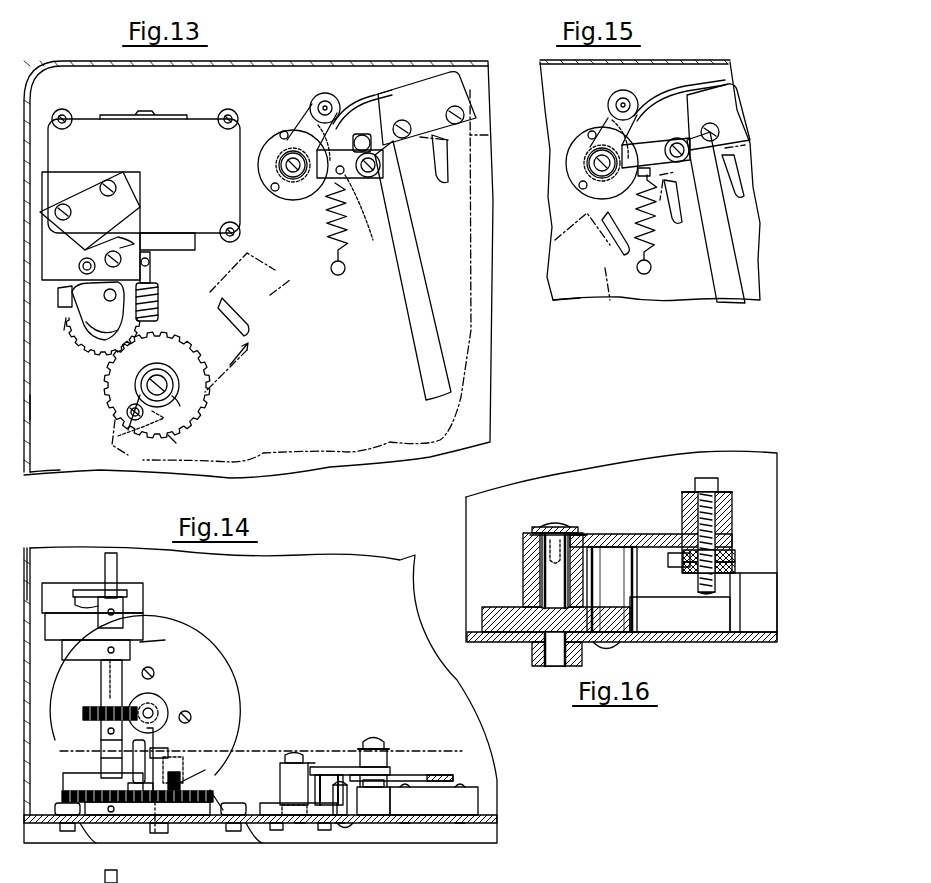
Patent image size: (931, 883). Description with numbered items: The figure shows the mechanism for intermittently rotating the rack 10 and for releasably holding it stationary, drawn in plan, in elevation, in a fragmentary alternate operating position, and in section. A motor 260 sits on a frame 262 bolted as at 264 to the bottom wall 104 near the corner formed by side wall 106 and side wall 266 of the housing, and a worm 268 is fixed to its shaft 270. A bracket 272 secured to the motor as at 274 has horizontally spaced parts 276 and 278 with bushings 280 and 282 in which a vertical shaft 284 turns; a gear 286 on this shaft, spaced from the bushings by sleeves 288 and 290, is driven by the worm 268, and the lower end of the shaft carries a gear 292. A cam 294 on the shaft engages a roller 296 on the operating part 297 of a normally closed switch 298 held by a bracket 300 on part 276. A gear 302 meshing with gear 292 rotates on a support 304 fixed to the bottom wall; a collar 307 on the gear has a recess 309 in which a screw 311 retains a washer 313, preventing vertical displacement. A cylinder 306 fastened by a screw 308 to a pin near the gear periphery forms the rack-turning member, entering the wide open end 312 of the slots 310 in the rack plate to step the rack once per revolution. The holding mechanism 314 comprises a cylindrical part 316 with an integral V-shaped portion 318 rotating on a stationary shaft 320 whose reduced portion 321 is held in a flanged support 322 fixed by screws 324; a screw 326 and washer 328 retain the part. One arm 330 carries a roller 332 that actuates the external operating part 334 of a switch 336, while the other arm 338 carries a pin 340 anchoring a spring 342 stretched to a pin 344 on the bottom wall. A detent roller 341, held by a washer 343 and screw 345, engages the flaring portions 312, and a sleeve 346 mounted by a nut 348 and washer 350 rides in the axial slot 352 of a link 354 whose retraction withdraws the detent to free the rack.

In FIG. 13, the rack 10 is at (310, 442).
In FIG. 15, the rack 10 is at (621, 298).
In FIG. 14, the rack 10 is at (276, 750).
In FIG. 13, the bottom wall 104 is at (68, 468).
In FIG. 15, the bottom wall 104 is at (573, 293).
In FIG. 16, the bottom wall 104 is at (698, 640).
In FIG. 14, the bottom wall 104 is at (499, 817).
In FIG. 13, the side wall 106 is at (31, 412).
In FIG. 14, the side wall 106 is at (34, 560).
In FIG. 13, the motor 260 is at (199, 126).
In FIG. 14, the motor 260 is at (212, 654).
In FIG. 13, the frame 262 is at (56, 114).
In FIG. 14, the frame 262 is at (90, 825).
In FIG. 13, the bolts 264 is at (64, 112).
In FIG. 14, the bolts 264 is at (68, 832).
In FIG. 13, the side wall 266 is at (270, 64).
In FIG. 15, the side wall 266 is at (707, 62).
In FIG. 16, the side wall 266 is at (655, 460).
In FIG. 14, the side wall 266 is at (373, 565).
In FIG. 13, the worm 268 is at (158, 290).
In FIG. 14, the worm 268 is at (152, 705).
In FIG. 13, the shaft 270 is at (157, 266).
In FIG. 13, the bracket 272 is at (172, 246).
In FIG. 14, the bracket 272 is at (173, 678).
In FIG. 13, the fastening 274 is at (150, 262).
In FIG. 14, the fastening 274 is at (151, 670).
In FIG. 13, the part 276 is at (82, 302).
In FIG. 14, the part 276 is at (68, 652).
In FIG. 14, the part 278 is at (70, 777).
In FIG. 14, the bushing 280 is at (102, 662).
In FIG. 14, the bushing 282 is at (118, 770).
In FIG. 13, the shaft 284 is at (104, 294).
In FIG. 14, the shaft 284 is at (119, 562).
In FIG. 13, the gear 286 is at (128, 305).
In FIG. 14, the gear 286 is at (84, 715).
In FIG. 14, the sleeve 288 is at (110, 690).
In FIG. 14, the sleeve 290 is at (108, 751).
In FIG. 13, the gear 292 is at (100, 342).
In FIG. 14, the gear 292 is at (70, 790).
In FIG. 13, the cam 294 is at (84, 326).
In FIG. 14, the cam 294 is at (128, 600).
In FIG. 13, the roller 296 is at (79, 266).
In FIG. 14, the roller 296 is at (85, 589).
In FIG. 13, the operating part 297 is at (110, 243).
In FIG. 14, the operating part 297 is at (80, 601).
In FIG. 13, the switch 298 is at (134, 204).
In FIG. 14, the switch 298 is at (136, 584).
In FIG. 13, the bracket 300 is at (85, 173).
In FIG. 14, the bracket 300 is at (141, 621).
In FIG. 13, the gear 302 is at (208, 403).
In FIG. 14, the gear 302 is at (216, 797).
In FIG. 13, the support 304 is at (125, 419).
In FIG. 14, the support 304 is at (195, 815).
In FIG. 13, the cylinder 306 is at (126, 412).
In FIG. 14, the cylinder 306 is at (146, 750).
In FIG. 13, the collar 307 is at (166, 400).
In FIG. 14, the collar 307 is at (171, 786).
In FIG. 13, the screw 308 is at (124, 401).
In FIG. 14, the screw 308 is at (165, 712).
In FIG. 13, the recess 309 is at (172, 389).
In FIG. 14, the recess 309 is at (176, 775).
In FIG. 13, the slots 310 is at (242, 320).
In FIG. 15, the slots 310 is at (620, 250).
In FIG. 13, the screw 311 is at (150, 388).
In FIG. 14, the screw 311 is at (150, 764).
In FIG. 13, the open end 312 is at (222, 301).
In FIG. 15, the open end 312 is at (742, 144).
In FIG. 13, the washer 313 is at (149, 382).
In FIG. 14, the washer 313 is at (195, 770).
In FIG. 13, the mechanism 314 is at (329, 95).
In FIG. 15, the mechanism 314 is at (637, 95).
In FIG. 16, the mechanism 314 is at (620, 505).
In FIG. 14, the mechanism 314 is at (326, 765).
In FIG. 13, the cylindrical part 316 is at (280, 160).
In FIG. 15, the cylindrical part 316 is at (602, 163).
In FIG. 16, the cylindrical part 316 is at (527, 583).
In FIG. 14, the cylindrical part 316 is at (290, 776).
In FIG. 13, the V-shaped portion 318 is at (303, 136).
In FIG. 15, the V-shaped portion 318 is at (602, 142).
In FIG. 14, the V-shaped portion 318 is at (318, 766).
In FIG. 16, the shaft 320 is at (549, 573).
In FIG. 16, the reduced portion 321 is at (555, 660).
In FIG. 13, the flanged support 322 is at (295, 200).
In FIG. 15, the flanged support 322 is at (573, 170).
In FIG. 16, the flanged support 322 is at (505, 612).
In FIG. 14, the flanged support 322 is at (310, 818).
In FIG. 13, the screws 324 is at (281, 135).
In FIG. 15, the screws 324 is at (588, 135).
In FIG. 16, the screws 324 is at (612, 651).
In FIG. 14, the screws 324 is at (276, 824).
In FIG. 13, the screw 326 is at (283, 166).
In FIG. 15, the screw 326 is at (602, 163).
In FIG. 16, the screw 326 is at (571, 527).
In FIG. 13, the washer 328 is at (299, 178).
In FIG. 16, the washer 328 is at (582, 537).
In FIG. 13, the arm 330 is at (315, 100).
In FIG. 15, the arm 330 is at (610, 105).
In FIG. 13, the roller 332 is at (321, 94).
In FIG. 15, the roller 332 is at (614, 95).
In FIG. 16, the roller 332 is at (616, 550).
In FIG. 14, the roller 332 is at (328, 775).
In FIG. 13, the external operating part 334 is at (357, 106).
In FIG. 15, the external operating part 334 is at (669, 93).
In FIG. 16, the external operating part 334 is at (694, 608).
In FIG. 14, the external operating part 334 is at (378, 804).
In FIG. 13, the switch 336 is at (421, 87).
In FIG. 15, the switch 336 is at (733, 106).
In FIG. 16, the switch 336 is at (768, 644).
In FIG. 14, the switch 336 is at (477, 796).
In FIG. 13, the arm 338 is at (342, 150).
In FIG. 15, the arm 338 is at (645, 146).
In FIG. 16, the arm 338 is at (657, 535).
In FIG. 14, the arm 338 is at (390, 771).
In FIG. 15, the pin 340 is at (605, 178).
In FIG. 14, the pin 340 is at (344, 812).
In FIG. 16, the roller 341 is at (733, 511).
In FIG. 14, the roller 341 is at (386, 758).
In FIG. 13, the spring 342 is at (330, 245).
In FIG. 15, the spring 342 is at (638, 202).
In FIG. 14, the spring 342 is at (302, 790).
In FIG. 13, the washer 343 is at (362, 180).
In FIG. 16, the washer 343 is at (733, 493).
In FIG. 14, the washer 343 is at (386, 747).
In FIG. 13, the pin 344 is at (338, 276).
In FIG. 15, the pin 344 is at (646, 275).
In FIG. 14, the pin 344 is at (352, 826).
In FIG. 13, the screw 345 is at (381, 165).
In FIG. 15, the screw 345 is at (674, 142).
In FIG. 16, the screw 345 is at (710, 478).
In FIG. 14, the screw 345 is at (378, 738).
In FIG. 16, the sleeve 346 is at (737, 556).
In FIG. 16, the nut 348 is at (690, 575).
In FIG. 16, the washer 350 is at (737, 568).
In FIG. 13, the axial slot 352 is at (366, 144).
In FIG. 15, the axial slot 352 is at (685, 140).
In FIG. 13, the link 354 is at (398, 238).
In FIG. 15, the link 354 is at (722, 258).
In FIG. 16, the link 354 is at (740, 565).
In FIG. 14, the link 354 is at (447, 779).